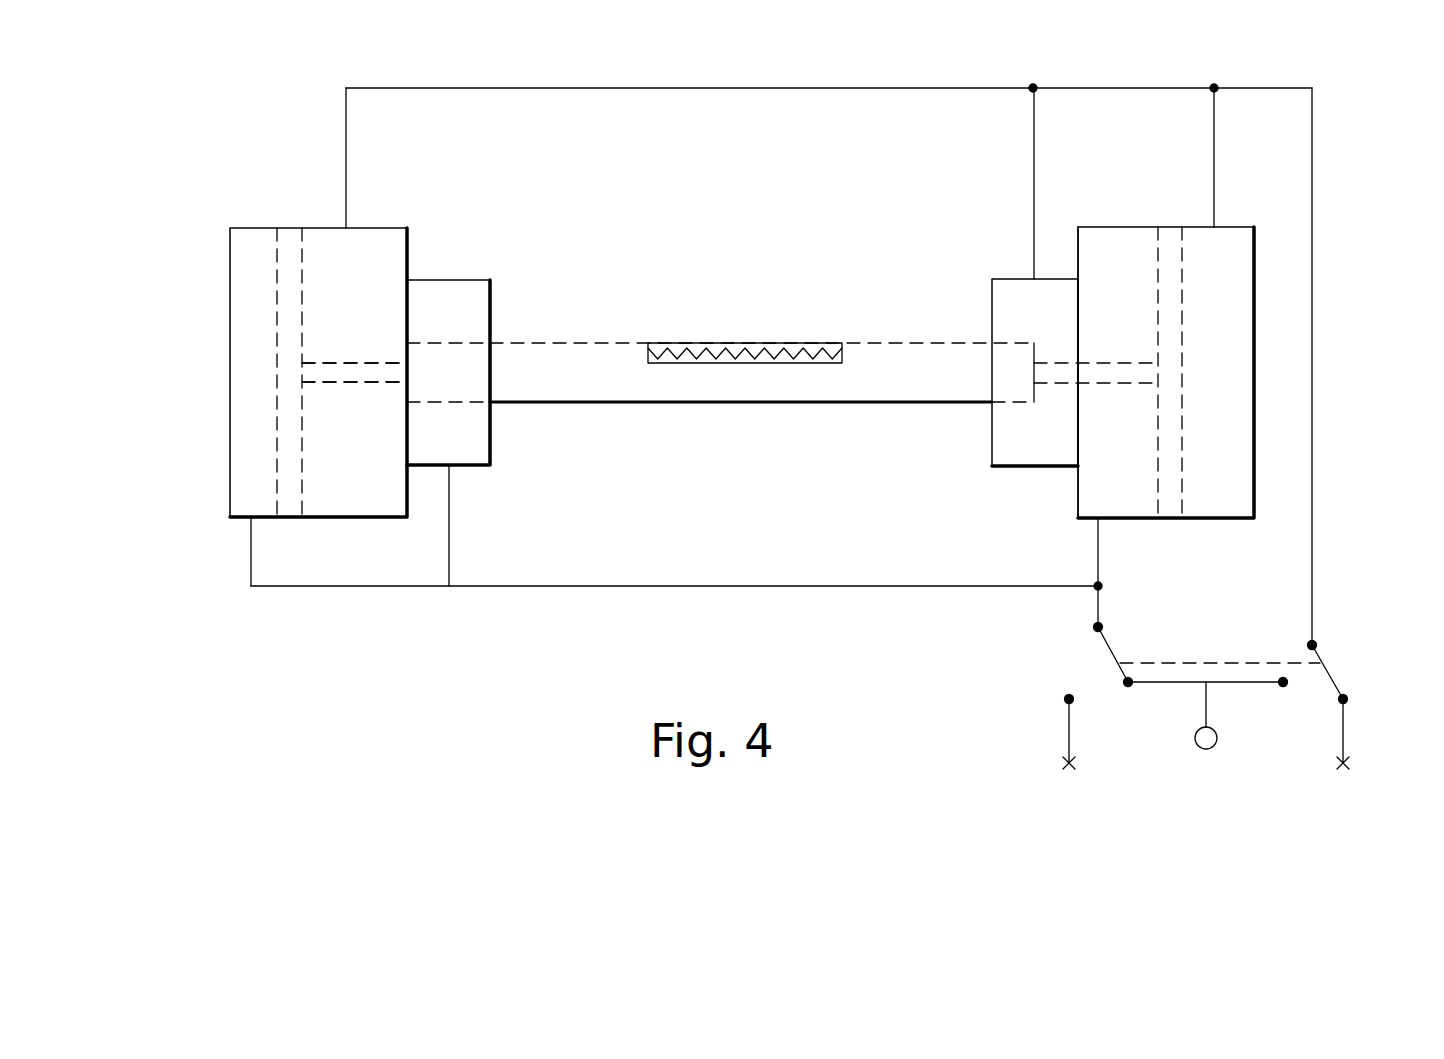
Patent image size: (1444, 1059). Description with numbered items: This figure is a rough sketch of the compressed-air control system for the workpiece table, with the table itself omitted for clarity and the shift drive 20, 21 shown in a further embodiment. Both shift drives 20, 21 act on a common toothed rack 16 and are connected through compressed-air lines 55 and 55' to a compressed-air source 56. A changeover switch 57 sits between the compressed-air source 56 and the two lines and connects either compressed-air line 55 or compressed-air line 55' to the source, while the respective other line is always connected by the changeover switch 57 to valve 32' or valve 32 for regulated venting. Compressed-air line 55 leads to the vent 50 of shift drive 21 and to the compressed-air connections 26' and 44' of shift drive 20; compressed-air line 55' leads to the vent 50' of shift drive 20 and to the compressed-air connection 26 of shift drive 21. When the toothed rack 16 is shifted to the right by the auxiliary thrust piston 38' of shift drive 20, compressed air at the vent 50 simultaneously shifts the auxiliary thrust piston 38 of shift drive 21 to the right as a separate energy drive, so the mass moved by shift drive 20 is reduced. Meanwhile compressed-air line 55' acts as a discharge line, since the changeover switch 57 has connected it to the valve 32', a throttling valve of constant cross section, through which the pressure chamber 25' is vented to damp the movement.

The toothed rack 16 is at (903, 389).
The shift drive 20 is at (230, 383).
The shift drive 21 is at (1254, 323).
The pressure chamber 25' is at (1222, 372).
The compressed-air connection 26 is at (1024, 277).
The compressed-air connection 26' is at (462, 433).
The valve 32 is at (1103, 744).
The valve 32' is at (1382, 743).
The auxiliary thrust piston 38 is at (1195, 372).
The auxiliary thrust piston 38' is at (318, 372).
The compressed-air connection 44' is at (212, 551).
The vent 50 is at (1127, 572).
The vent 50' is at (378, 158).
The compressed-air line 55 is at (674, 616).
The compressed-air line 55' is at (829, 66).
The compressed-air source 56 is at (1216, 745).
The changeover switch 57 is at (1338, 616).